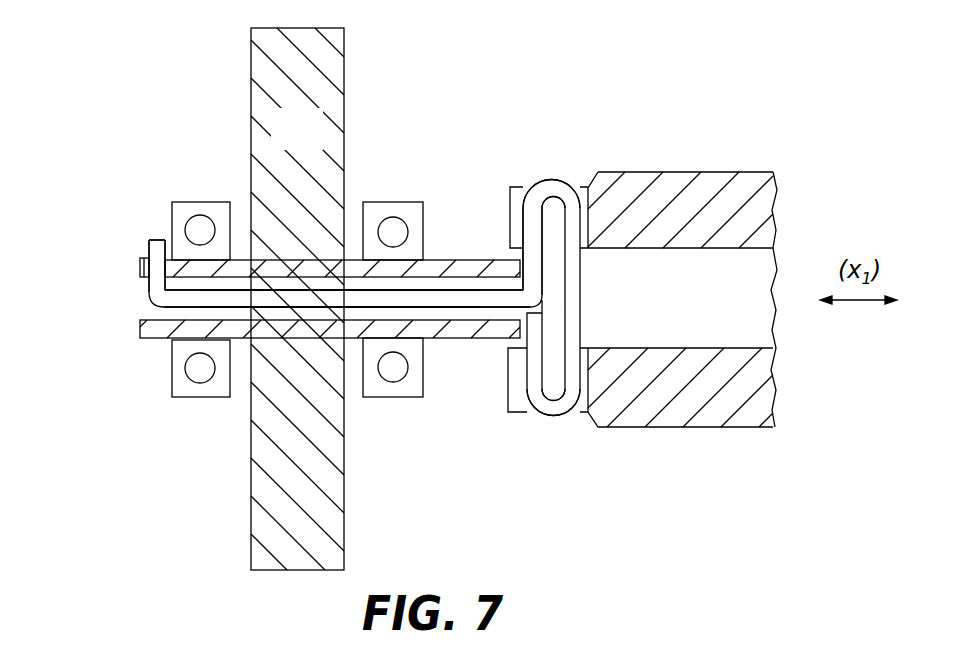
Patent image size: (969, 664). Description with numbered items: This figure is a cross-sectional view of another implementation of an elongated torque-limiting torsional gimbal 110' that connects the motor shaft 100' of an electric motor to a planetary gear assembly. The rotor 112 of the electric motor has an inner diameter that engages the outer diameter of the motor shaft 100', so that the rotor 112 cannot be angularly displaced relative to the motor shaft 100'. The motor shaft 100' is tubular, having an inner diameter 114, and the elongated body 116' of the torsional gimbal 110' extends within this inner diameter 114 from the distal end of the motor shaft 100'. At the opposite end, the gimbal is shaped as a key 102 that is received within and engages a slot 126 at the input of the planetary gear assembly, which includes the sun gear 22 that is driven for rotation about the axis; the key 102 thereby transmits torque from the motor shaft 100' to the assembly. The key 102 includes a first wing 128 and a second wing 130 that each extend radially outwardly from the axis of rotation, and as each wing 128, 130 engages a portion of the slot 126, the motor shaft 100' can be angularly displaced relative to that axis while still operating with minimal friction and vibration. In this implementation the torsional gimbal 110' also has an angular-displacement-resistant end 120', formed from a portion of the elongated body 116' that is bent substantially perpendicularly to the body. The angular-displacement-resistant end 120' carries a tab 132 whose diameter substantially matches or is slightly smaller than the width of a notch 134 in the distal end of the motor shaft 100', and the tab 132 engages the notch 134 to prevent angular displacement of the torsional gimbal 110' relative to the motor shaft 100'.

The sun gear 22 is at (733, 160).
The motor shaft 100' is at (330, 384).
The key 102 is at (582, 157).
The torsional gimbal 110' is at (347, 228).
The rotor 112 is at (317, 145).
The inner diameter 114 is at (355, 275).
The elongated body 116' is at (325, 381).
The angular-displacement-resistant end 120' is at (322, 307).
The slot 126 is at (523, 188).
The first wing 128 is at (552, 178).
The second wing 130 is at (552, 417).
The tab 132 is at (162, 247).
The notch 134 is at (140, 268).